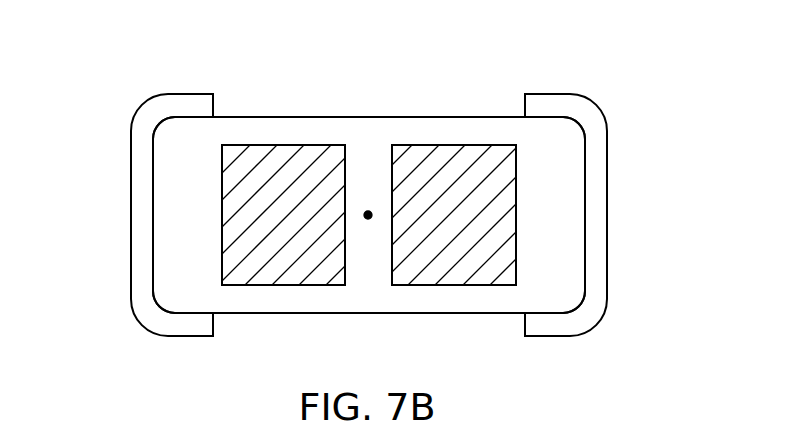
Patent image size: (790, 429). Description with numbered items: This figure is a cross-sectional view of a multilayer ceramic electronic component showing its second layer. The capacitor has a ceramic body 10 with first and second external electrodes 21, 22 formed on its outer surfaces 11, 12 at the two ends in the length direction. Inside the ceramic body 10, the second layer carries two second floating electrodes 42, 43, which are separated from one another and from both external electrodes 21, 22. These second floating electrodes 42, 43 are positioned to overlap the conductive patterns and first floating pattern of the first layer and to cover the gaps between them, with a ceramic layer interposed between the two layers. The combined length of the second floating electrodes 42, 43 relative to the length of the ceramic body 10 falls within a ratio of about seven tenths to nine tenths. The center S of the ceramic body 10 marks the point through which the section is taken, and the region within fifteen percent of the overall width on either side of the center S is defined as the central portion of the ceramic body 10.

The ceramic body 10 is at (244, 128).
The outer surface 11 is at (152, 252).
The outer surface 12 is at (586, 248).
The first external electrode 21 is at (181, 103).
The second external electrode 22 is at (551, 103).
The second floating electrode 42 is at (281, 145).
The second floating electrode 43 is at (452, 145).
The center of the ceramic body S is at (368, 212).